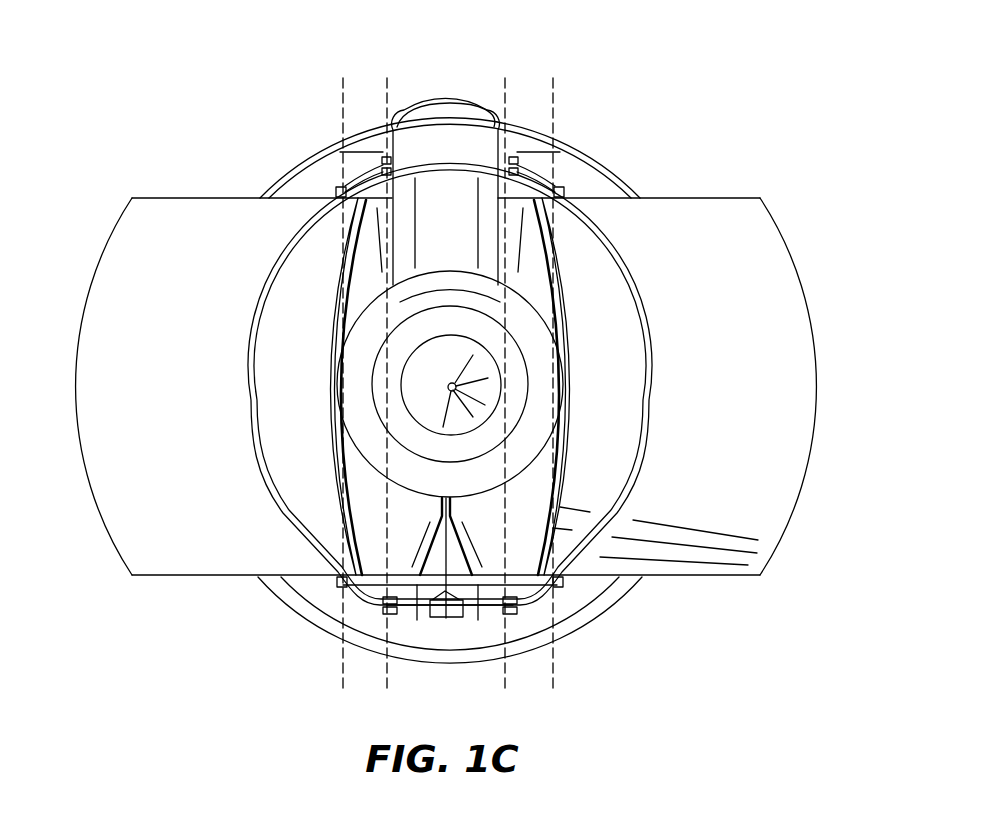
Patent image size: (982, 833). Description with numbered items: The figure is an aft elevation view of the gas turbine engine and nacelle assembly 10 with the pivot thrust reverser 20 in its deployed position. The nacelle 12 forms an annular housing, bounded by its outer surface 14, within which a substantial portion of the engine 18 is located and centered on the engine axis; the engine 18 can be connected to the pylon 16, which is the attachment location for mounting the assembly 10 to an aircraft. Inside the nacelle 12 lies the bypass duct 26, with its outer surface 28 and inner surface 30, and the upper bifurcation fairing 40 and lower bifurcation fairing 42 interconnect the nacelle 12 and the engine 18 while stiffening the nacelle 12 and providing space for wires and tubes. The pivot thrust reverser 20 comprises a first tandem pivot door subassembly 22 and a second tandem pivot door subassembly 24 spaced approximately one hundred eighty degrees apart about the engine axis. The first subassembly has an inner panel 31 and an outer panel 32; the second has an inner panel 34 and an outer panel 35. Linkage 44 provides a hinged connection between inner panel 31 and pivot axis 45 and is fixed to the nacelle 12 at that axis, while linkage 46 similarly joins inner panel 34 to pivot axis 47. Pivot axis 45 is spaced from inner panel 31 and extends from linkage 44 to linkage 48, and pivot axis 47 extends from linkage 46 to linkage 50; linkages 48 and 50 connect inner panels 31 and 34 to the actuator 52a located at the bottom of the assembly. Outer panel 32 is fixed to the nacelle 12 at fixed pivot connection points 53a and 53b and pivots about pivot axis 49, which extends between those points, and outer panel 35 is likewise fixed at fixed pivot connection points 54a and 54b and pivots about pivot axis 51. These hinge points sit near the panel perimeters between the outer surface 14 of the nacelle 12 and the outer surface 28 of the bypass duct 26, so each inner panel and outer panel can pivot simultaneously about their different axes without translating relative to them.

The gas turbine engine and nacelle assembly 10 is at (178, 73).
The nacelle 12 is at (645, 178).
The outer surface of nacelle 14 is at (333, 621).
The pylon 16 is at (447, 96).
The engine 18 is at (522, 434).
The pivot thrust reverser 20 is at (751, 180).
The first tandem pivot door subassembly 22 is at (57, 349).
The second tandem pivot door subassembly 24 is at (837, 347).
The bypass duct 26 is at (413, 647).
The outer surface of bypass duct 28 is at (350, 603).
The inner surface of bypass duct 30 is at (360, 434).
The inner panel 31 is at (368, 518).
The outer panel 32 is at (330, 478).
The inner panel 34 is at (532, 268).
The outer panel 35 is at (590, 302).
The upper bifurcation fairing 40 is at (453, 197).
The lower bifurcation fairing 42 is at (457, 572).
The linkage 44 is at (342, 190).
The pivot axis 45 is at (387, 95).
The linkage 46 is at (560, 190).
The pivot axis 47 is at (505, 95).
The linkage 48 is at (353, 637).
The pivot axis 49 is at (342, 95).
The linkage 50 is at (513, 615).
The pivot axis 51 is at (553, 95).
The actuator 52a is at (445, 619).
The fixed pivot connection point 53a is at (340, 186).
The fixed pivot connection point 53b is at (338, 586).
The fixed pivot connection point 54a is at (560, 186).
The fixed pivot connection point 54b is at (556, 586).